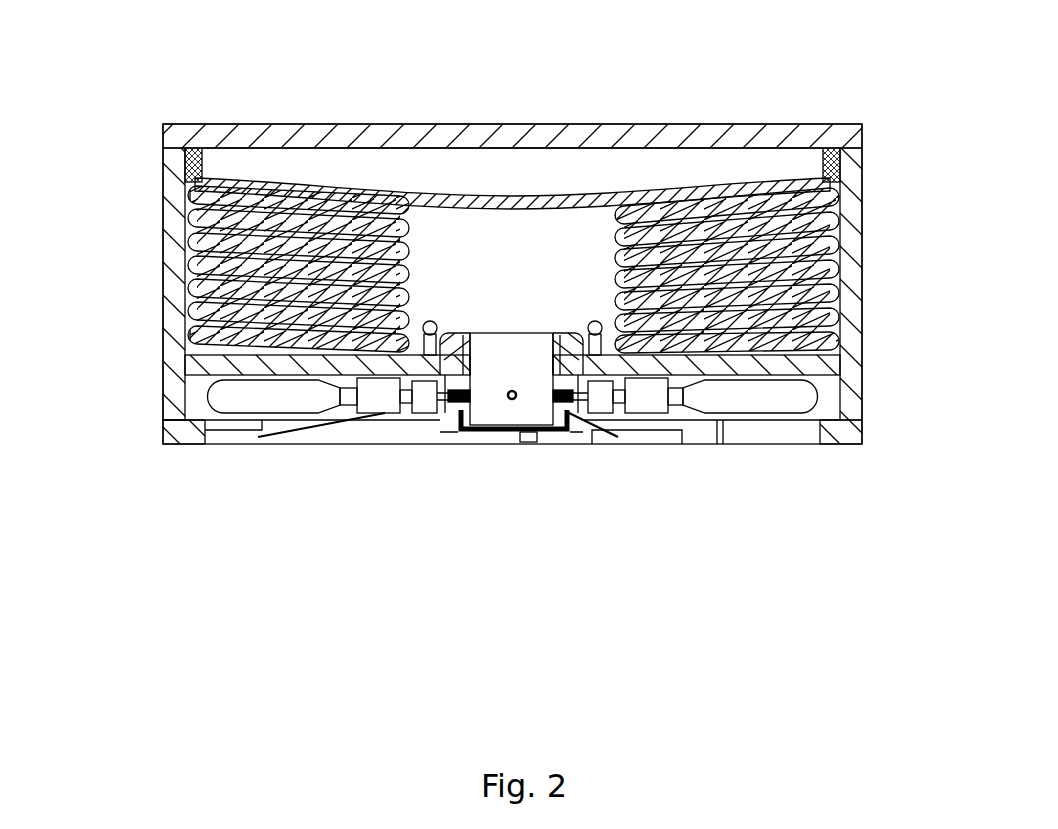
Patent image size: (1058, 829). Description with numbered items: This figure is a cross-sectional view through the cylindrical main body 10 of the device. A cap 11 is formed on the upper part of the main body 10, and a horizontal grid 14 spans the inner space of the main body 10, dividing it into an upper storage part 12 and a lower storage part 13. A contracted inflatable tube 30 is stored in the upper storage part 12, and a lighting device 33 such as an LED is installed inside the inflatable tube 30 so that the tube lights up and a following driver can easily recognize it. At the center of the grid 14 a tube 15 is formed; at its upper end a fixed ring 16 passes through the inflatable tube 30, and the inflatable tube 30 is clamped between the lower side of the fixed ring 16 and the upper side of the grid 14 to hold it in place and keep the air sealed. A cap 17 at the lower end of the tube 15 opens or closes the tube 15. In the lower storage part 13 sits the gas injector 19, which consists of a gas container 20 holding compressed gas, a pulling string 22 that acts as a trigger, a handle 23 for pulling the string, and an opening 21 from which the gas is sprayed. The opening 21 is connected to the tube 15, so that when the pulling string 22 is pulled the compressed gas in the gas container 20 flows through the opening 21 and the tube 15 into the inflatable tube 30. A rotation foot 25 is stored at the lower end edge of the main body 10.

The main body 10 is at (168, 240).
The cap 11 is at (678, 125).
The upper storage part 12 is at (777, 164).
The lower storage part 13 is at (831, 393).
The grid 14 is at (217, 347).
The tube 15 is at (495, 413).
The fixed ring 16 is at (566, 333).
The cap 17 is at (517, 433).
The gas injector 19 is at (383, 397).
The gas container 20 is at (293, 395).
The opening 21 is at (438, 413).
The pulling string 22 is at (323, 420).
The handle 23 is at (248, 427).
The rotation foot 25 is at (185, 444).
The inflatable tube 30 is at (318, 192).
The lighting device 33 is at (430, 321).